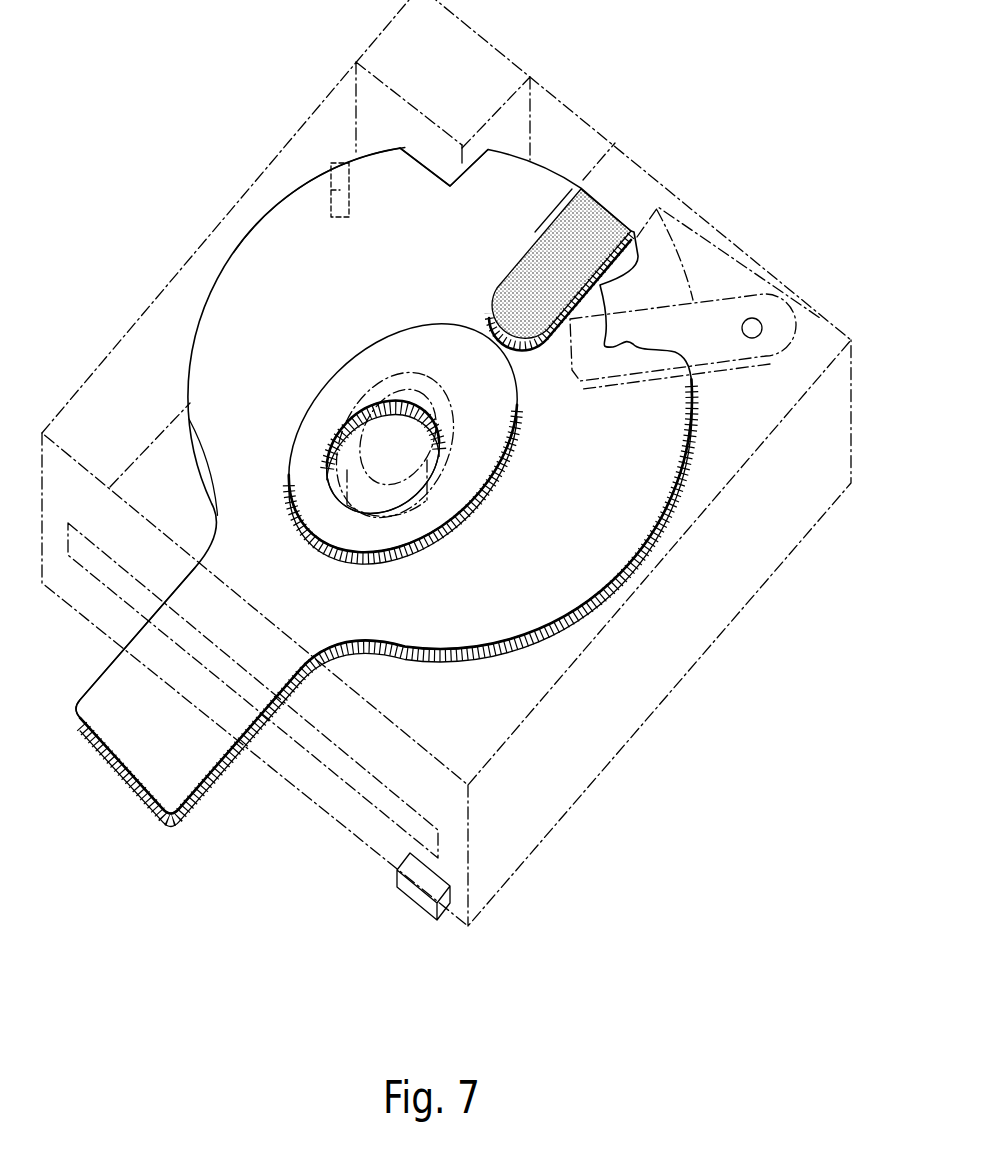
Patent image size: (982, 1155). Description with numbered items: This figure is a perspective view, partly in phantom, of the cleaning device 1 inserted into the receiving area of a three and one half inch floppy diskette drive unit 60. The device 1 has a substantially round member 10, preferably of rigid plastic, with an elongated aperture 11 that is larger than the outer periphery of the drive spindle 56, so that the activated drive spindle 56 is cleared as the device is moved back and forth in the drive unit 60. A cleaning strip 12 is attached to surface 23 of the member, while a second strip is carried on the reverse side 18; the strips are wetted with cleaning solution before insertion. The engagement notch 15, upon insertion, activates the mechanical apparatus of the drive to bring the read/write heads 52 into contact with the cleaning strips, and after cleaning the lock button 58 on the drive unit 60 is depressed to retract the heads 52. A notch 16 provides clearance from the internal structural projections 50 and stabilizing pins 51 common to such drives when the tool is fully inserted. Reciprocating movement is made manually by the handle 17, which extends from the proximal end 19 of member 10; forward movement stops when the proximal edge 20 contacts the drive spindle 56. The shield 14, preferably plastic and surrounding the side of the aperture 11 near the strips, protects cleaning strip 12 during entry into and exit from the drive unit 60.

The device 1 is at (499, 657).
The round member 10 is at (668, 438).
The elongated aperture 11 is at (368, 515).
The cleaning strip 12 is at (497, 298).
The shield 14 is at (496, 433).
The engagement notch 15 is at (649, 352).
The notch 16 is at (446, 188).
The handle 17 is at (178, 789).
The reverse side 18 is at (257, 217).
The proximal end 19 is at (208, 484).
The proximal edge 20 is at (318, 498).
The surface 23 is at (377, 278).
The internal structural projections 50 is at (522, 117).
The stabilizing pins 51 is at (331, 200).
The read/write heads 52 is at (645, 178).
The drive spindle 56 is at (390, 383).
The lock button 58 is at (398, 884).
The floppy diskette drive unit 60 is at (652, 657).